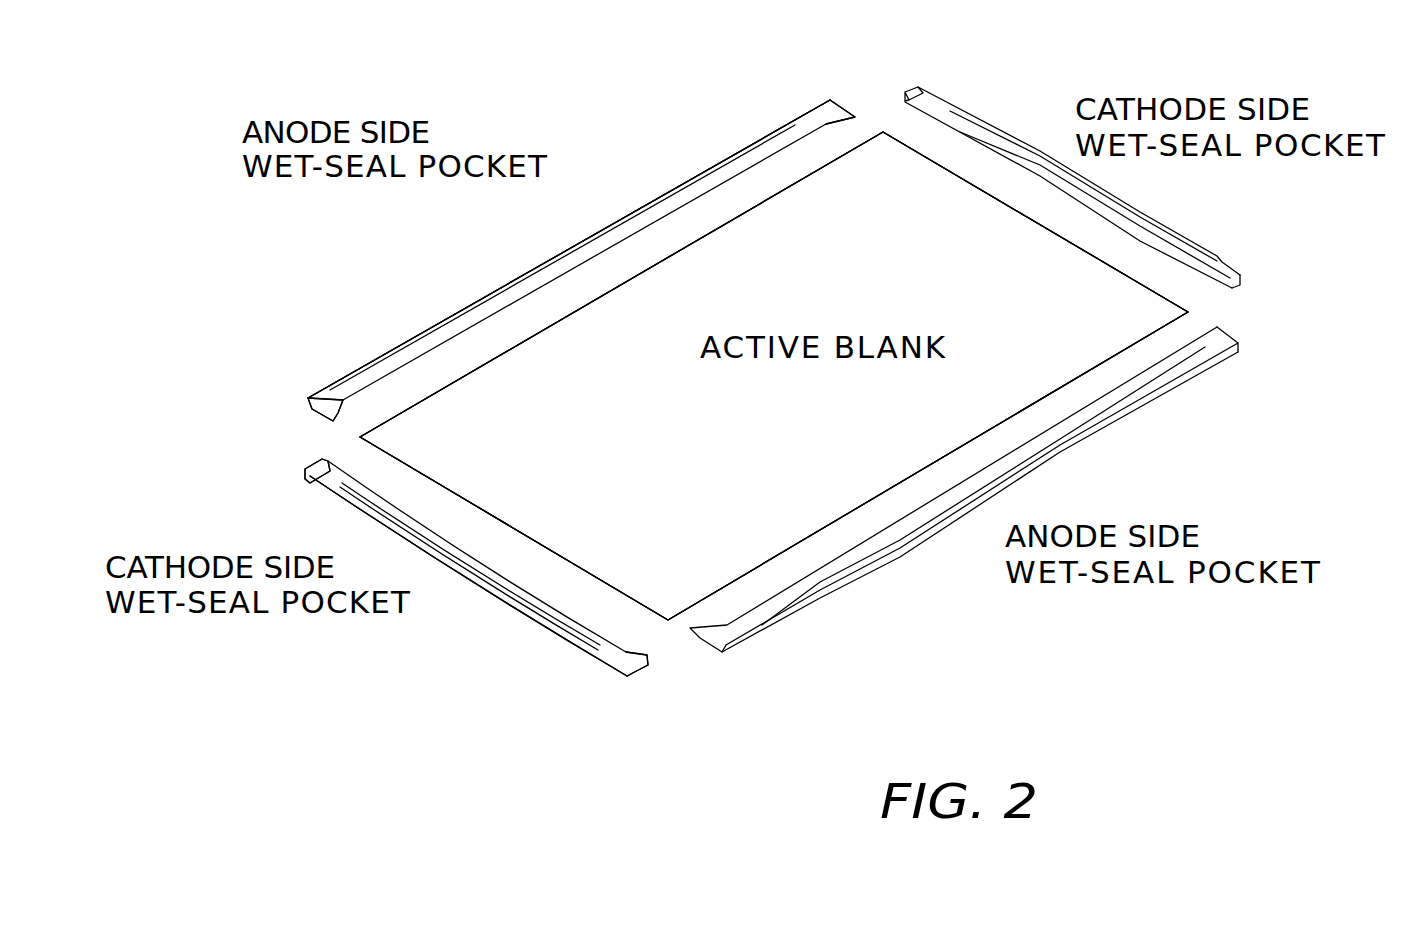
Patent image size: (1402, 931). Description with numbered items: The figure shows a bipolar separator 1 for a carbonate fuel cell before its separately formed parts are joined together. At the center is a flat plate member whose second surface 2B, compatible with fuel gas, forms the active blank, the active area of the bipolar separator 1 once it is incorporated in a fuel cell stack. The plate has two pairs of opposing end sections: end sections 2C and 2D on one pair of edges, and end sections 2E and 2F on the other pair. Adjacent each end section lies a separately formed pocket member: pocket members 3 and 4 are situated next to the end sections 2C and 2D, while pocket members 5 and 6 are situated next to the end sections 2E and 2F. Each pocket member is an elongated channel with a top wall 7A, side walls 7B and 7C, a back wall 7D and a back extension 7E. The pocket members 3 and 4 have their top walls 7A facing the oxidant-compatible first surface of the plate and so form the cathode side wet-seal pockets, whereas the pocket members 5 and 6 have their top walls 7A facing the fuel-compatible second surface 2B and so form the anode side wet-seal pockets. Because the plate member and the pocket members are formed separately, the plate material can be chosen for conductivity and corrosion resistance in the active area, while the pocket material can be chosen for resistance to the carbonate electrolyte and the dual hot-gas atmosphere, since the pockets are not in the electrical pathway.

The bipolar separator 1 is at (877, 84).
The second surface 2B is at (751, 246).
The end section 2C is at (563, 528).
The end section 2D is at (1025, 236).
The end section 2E is at (633, 300).
The end section 2F is at (882, 470).
The pocket member 3 is at (625, 645).
The pocket member 4 is at (1197, 265).
The pocket member 5 is at (440, 347).
The pocket member 6 is at (1143, 388).
The top wall 7A is at (478, 313).
The side wall 7B is at (315, 412).
The side wall 7C is at (840, 107).
The back wall 7D is at (579, 253).
The back extension 7E is at (667, 193).